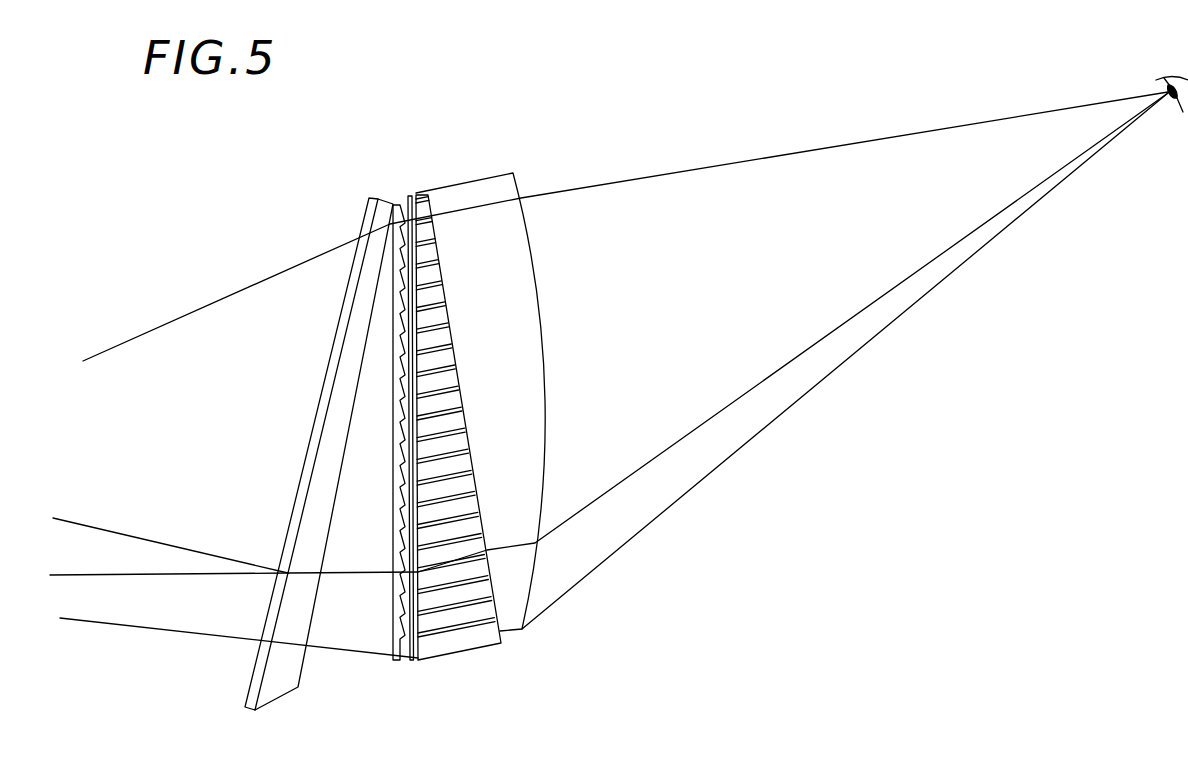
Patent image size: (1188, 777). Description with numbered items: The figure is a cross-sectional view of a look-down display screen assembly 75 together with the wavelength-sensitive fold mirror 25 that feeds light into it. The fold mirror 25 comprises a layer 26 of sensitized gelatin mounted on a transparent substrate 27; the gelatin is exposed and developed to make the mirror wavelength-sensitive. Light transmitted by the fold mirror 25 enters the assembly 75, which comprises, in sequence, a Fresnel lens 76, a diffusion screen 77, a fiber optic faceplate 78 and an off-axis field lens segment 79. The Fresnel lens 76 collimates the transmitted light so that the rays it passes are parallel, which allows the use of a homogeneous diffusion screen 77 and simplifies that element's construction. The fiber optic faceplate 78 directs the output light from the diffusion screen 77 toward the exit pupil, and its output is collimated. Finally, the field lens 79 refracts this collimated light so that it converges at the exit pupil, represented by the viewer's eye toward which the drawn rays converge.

The wavelength-sensitive fold mirror 25 is at (289, 481).
The layer of sensitized gelatin 26 is at (250, 665).
The transparent substrate 27 is at (243, 711).
The screen assembly 75 is at (462, 450).
The Fresnel lens 76 is at (397, 662).
The diffusion screen 77 is at (412, 662).
The fiber optic faceplate 78 is at (457, 654).
The off-axis field lens segment 79 is at (512, 633).